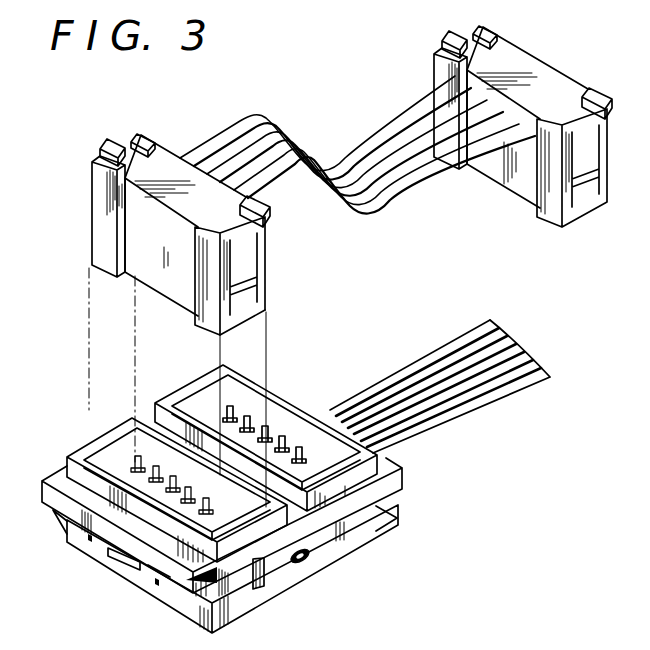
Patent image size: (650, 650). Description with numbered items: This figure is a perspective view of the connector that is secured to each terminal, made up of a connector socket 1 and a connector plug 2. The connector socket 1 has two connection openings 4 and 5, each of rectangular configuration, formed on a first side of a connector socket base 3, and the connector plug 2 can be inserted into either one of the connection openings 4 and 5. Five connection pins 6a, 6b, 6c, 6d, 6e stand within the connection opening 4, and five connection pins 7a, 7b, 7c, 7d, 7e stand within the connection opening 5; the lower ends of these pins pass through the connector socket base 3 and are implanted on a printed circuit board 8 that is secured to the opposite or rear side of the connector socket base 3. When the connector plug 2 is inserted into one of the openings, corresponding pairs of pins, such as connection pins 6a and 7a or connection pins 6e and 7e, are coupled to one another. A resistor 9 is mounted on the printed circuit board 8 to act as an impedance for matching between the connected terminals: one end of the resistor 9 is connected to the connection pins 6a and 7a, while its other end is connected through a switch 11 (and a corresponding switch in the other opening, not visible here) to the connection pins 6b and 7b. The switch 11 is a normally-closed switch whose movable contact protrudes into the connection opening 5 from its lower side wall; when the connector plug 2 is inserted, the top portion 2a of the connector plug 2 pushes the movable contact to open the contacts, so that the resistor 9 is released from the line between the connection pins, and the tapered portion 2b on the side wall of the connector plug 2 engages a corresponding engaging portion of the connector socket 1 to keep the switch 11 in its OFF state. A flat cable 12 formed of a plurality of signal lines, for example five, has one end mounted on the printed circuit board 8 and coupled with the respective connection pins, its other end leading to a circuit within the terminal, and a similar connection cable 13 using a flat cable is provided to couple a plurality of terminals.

The connector socket 1 is at (164, 507).
The connector plug 2 is at (316, 167).
The top portion of the connector plug 2a is at (254, 333).
The tapered portion 2b is at (130, 236).
The connector socket base 3 is at (402, 469).
The connection opening 4 is at (271, 418).
The connection opening 5 is at (108, 448).
The connection pin 6a is at (301, 452).
The connection pin 6b is at (286, 436).
The connection pin 6c is at (270, 422).
The connection pin 6d is at (249, 418).
The connection pin 6e is at (226, 410).
The connection pin 7a is at (209, 501).
The connection pin 7b is at (184, 510).
The connection pin 7c is at (175, 478).
The connection pin 7d is at (172, 477).
The connection pin 7e is at (138, 456).
The printed circuit board 8 is at (399, 521).
The resistor 9 is at (305, 562).
The switch 11 is at (224, 522).
The flat cable 12 is at (514, 393).
The connection cable 13 is at (334, 153).